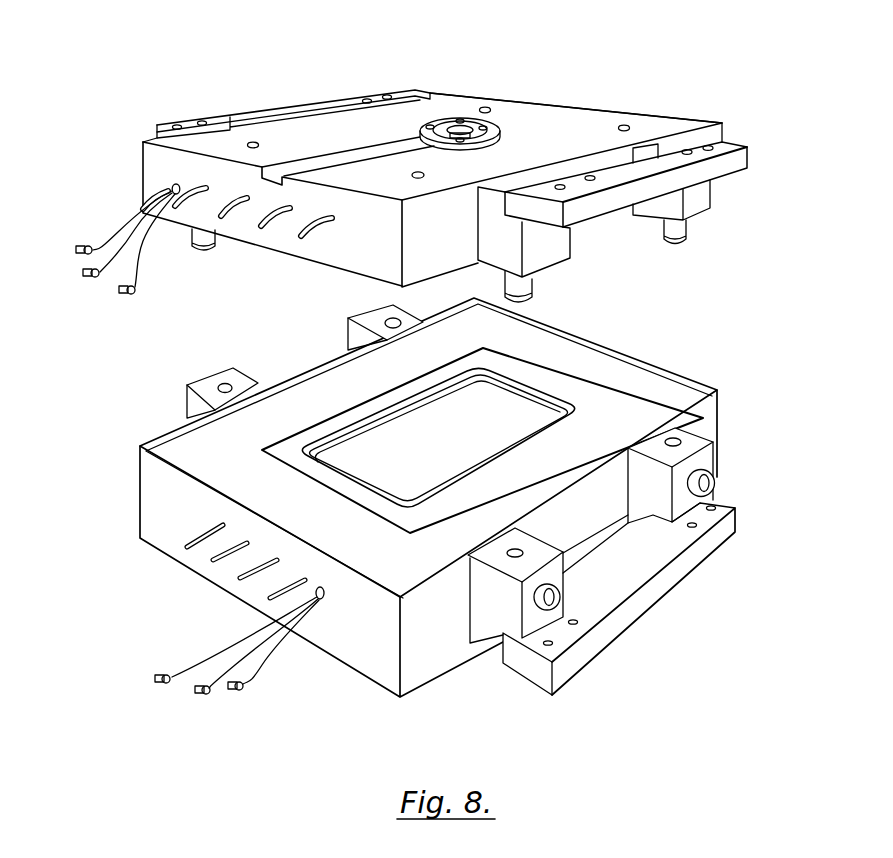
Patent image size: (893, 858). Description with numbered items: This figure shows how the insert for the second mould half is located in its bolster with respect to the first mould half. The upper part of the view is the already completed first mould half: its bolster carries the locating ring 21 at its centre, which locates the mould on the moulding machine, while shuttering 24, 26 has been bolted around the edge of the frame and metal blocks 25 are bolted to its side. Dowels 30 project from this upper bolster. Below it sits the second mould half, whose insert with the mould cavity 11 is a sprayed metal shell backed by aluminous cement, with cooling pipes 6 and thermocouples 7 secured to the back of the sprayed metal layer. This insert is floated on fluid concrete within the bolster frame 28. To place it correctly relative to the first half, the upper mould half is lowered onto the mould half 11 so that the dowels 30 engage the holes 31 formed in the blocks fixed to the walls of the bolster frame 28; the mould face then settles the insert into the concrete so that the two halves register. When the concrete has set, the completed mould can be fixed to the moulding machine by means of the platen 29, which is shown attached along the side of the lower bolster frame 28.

The cooling pipes 6 is at (162, 533).
The thermocouples 7 is at (252, 703).
The mould cavity 11 is at (483, 433).
The locating ring 21 is at (500, 127).
The shuttering 24 is at (322, 252).
The metal blocks 25 is at (728, 160).
The shuttering 26 is at (437, 267).
The bolster frame 28 is at (360, 660).
The platen 29 is at (623, 580).
The dowels 30 is at (203, 238).
The holes 31 is at (227, 383).